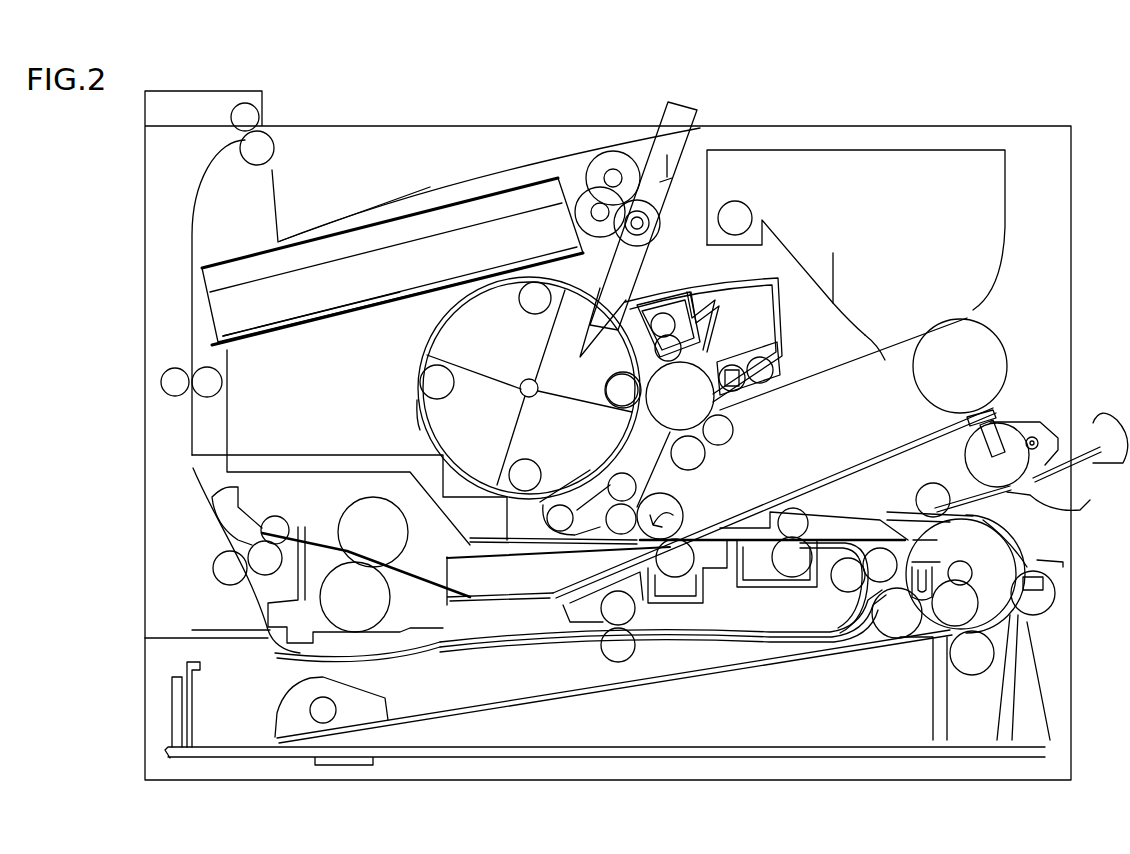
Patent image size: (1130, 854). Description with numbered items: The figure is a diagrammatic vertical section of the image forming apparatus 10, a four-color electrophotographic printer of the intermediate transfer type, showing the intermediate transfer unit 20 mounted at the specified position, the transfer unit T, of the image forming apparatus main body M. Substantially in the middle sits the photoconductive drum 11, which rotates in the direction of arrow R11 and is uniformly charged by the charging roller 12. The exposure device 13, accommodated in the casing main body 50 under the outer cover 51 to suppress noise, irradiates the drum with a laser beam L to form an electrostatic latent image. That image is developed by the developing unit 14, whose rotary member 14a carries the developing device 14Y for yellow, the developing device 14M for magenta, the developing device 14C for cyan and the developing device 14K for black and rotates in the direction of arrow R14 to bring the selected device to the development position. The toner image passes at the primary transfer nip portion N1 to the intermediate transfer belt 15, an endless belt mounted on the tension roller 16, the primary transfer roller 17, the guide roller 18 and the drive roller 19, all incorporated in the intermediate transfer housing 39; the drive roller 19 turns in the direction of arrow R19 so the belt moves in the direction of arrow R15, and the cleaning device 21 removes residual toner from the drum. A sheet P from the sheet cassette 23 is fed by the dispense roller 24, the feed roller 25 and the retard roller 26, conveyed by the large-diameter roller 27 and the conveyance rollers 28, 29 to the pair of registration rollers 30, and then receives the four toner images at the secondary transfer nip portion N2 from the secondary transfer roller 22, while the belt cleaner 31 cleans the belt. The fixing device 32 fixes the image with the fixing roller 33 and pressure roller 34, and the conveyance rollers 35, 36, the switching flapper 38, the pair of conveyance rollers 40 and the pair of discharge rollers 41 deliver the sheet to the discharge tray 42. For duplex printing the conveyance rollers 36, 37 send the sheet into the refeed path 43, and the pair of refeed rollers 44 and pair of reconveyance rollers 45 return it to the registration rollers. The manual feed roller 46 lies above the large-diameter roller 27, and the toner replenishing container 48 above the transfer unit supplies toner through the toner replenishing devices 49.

The image forming apparatus 10 is at (609, 112).
The photoconductive drum 11 is at (735, 410).
The charging roller 12 is at (668, 300).
The exposure device 13 is at (407, 215).
The developing unit 14 is at (418, 348).
The rotary member 14a is at (420, 413).
The developing device for cyan 14C is at (418, 438).
The developing device for black 14K is at (448, 330).
The developing device for magenta 14M is at (547, 543).
The developing device for yellow 14Y is at (638, 418).
The intermediate transfer belt 15 is at (798, 378).
The tension roller 16 is at (1005, 378).
The primary transfer roller 17 is at (735, 438).
The guide roller 18 is at (706, 458).
The drive roller 19 is at (680, 520).
The intermediate transfer unit 20 is at (1000, 342).
The cleaning device 21 is at (713, 297).
The secondary transfer roller 22 is at (712, 572).
The sheet cassette 23 is at (736, 782).
The dispense roller 24 is at (870, 655).
The feed roller 25 is at (936, 634).
The retard roller 26 is at (966, 668).
The large-diameter roller 27 is at (993, 540).
The conveyance roller 28 is at (1057, 613).
The conveyance roller 29 is at (933, 482).
The pair of registration rollers 30 is at (805, 520).
The belt cleaner 31 is at (606, 530).
The fixing device 32 is at (338, 522).
The fixing roller 33 is at (410, 533).
The pressure roller 34 is at (392, 605).
The conveyance roller 35 is at (273, 520).
The conveyance roller 36 is at (268, 577).
The conveyance roller 37 is at (224, 587).
The switching flapper 38 is at (196, 505).
The intermediate transfer housing 39 is at (903, 312).
The pair of conveyance rollers 40 is at (175, 366).
The pair of discharge rollers 41 is at (255, 114).
The discharge tray 42 is at (515, 160).
The refeed path 43 is at (447, 652).
The pair of refeed rollers 44 is at (610, 652).
The pair of reconveyance rollers 45 is at (840, 585).
The manual feed roller 46 is at (1070, 425).
The toner replenishing container 48 is at (888, 170).
The toner replenishing device 49 is at (684, 187).
The casing main body 50 is at (318, 305).
The outer cover 51 is at (347, 243).
The laser beam L is at (565, 252).
The transfer unit position T is at (832, 268).
The sheet P is at (527, 702).
The image forming apparatus main body M is at (1073, 300).
The primary transfer nip portion N1 is at (728, 362).
The secondary transfer nip portion N2 is at (663, 621).
The rotation direction of photoconductive drum R11 is at (652, 378).
The rotation direction of rotary member R14 is at (407, 393).
The turning direction of intermediate transfer belt R15 is at (880, 367).
The rotation direction of drive roller R19 is at (681, 489).